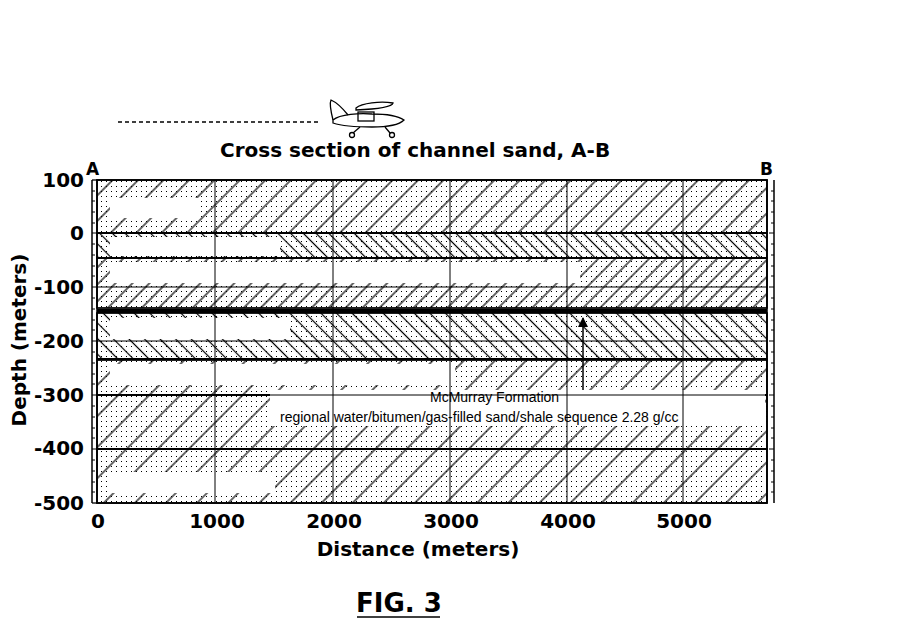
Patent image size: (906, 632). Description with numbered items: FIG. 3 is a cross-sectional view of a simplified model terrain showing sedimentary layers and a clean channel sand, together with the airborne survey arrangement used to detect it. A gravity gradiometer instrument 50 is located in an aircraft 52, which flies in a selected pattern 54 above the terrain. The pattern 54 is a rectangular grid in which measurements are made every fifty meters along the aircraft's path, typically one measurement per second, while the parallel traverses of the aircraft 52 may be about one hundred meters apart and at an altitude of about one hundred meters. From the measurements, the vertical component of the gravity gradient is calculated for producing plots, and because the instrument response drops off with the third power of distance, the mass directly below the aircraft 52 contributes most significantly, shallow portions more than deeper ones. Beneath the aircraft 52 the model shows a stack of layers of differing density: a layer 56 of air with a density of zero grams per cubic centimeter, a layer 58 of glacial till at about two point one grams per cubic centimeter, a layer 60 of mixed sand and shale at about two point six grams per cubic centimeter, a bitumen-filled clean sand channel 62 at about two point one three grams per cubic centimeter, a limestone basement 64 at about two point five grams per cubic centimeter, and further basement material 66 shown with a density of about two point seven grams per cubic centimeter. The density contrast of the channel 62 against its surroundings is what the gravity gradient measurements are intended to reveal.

The gravity gradiometer instrument 50 is at (366, 112).
The aircraft 52 is at (392, 96).
The selected pattern 54 is at (204, 122).
The layer of air 56 is at (768, 212).
The layer of glacial till 58 is at (768, 250).
The layer of mixed sand and shale 60 is at (768, 296).
The bitumen-filled clean sand channel 62 is at (412, 322).
The limestone basement 64 is at (768, 336).
The further basement material 66 is at (768, 488).